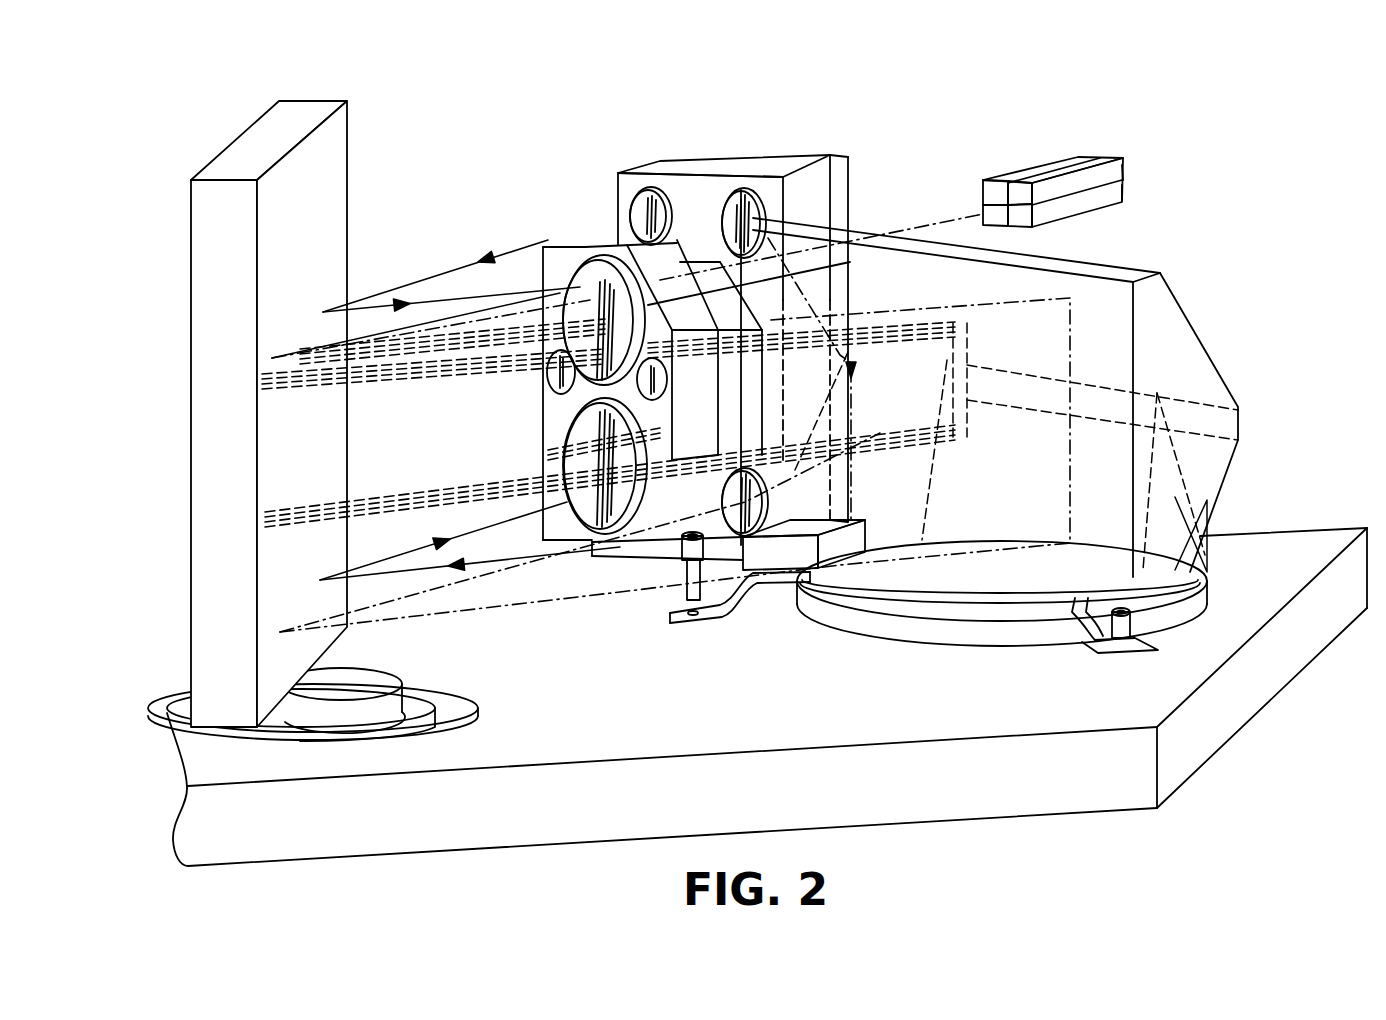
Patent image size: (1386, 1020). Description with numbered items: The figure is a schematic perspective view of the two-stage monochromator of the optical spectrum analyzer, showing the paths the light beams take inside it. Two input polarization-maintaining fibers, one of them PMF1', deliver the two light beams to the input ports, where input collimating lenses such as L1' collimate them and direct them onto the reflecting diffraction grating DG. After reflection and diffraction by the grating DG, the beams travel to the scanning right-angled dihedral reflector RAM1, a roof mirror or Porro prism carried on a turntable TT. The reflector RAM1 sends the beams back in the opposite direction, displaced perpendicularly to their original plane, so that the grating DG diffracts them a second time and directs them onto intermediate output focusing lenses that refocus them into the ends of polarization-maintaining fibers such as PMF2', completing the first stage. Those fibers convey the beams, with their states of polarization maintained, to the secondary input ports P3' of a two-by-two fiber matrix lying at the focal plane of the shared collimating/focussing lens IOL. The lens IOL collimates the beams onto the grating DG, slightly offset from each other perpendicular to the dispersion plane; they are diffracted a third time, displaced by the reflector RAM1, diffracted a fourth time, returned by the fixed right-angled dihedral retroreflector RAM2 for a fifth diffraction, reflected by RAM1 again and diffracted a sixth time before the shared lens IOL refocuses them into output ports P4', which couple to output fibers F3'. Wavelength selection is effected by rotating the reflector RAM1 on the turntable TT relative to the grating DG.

The reflecting diffraction grating DG is at (300, 112).
The shared collimating/focussing lens IOL is at (590, 283).
The input collimating lens L1' is at (609, 183).
The polarization maintaining fiber PMF1' is at (724, 275).
The secondary input port P3' is at (990, 168).
The output port P4' is at (1045, 146).
The polarization maintaining fiber PMF2' is at (1094, 146).
The output fiber F3' is at (1186, 187).
The scanning right-angled dihedral reflector RAM1 is at (1217, 352).
The fixed right-angled dihedral retroreflector RAM2 is at (590, 455).
The turntable TT is at (1183, 612).